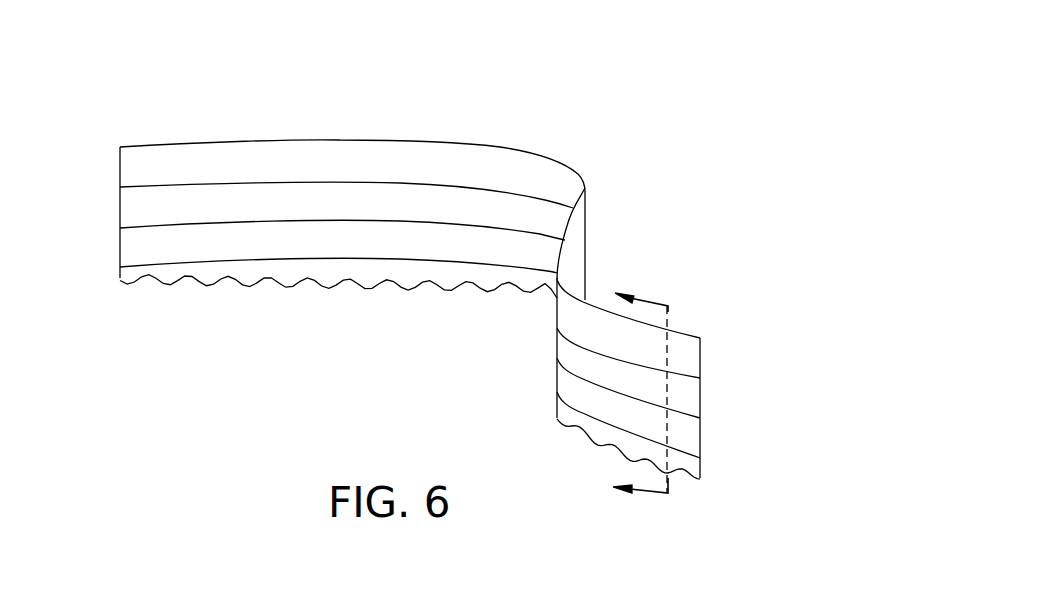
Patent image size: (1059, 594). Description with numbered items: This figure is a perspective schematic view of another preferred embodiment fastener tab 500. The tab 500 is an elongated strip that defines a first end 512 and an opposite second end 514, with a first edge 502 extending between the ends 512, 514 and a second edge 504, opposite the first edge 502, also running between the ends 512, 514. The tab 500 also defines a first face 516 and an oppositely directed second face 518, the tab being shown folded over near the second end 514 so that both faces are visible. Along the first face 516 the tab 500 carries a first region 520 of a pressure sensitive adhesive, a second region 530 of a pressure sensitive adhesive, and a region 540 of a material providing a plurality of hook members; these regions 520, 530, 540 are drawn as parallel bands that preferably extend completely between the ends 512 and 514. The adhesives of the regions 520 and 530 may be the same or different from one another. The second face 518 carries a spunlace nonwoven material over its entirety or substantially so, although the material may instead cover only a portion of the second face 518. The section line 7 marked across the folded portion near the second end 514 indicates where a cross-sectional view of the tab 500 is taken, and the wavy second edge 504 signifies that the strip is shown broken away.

The fastener tab 500 is at (699, 102).
The first edge 502 is at (478, 144).
The second edge 504 is at (477, 277).
The first end 512 is at (120, 206).
The second end 514 is at (700, 393).
The first face 516 is at (225, 158).
The second face 518 is at (577, 246).
The first region of pressure sensitive adhesive 520 is at (338, 157).
The second region of pressure sensitive adhesive 530 is at (277, 208).
The region of material providing hook members 540 is at (330, 247).
The section line 7- 7 is at (640, 395).